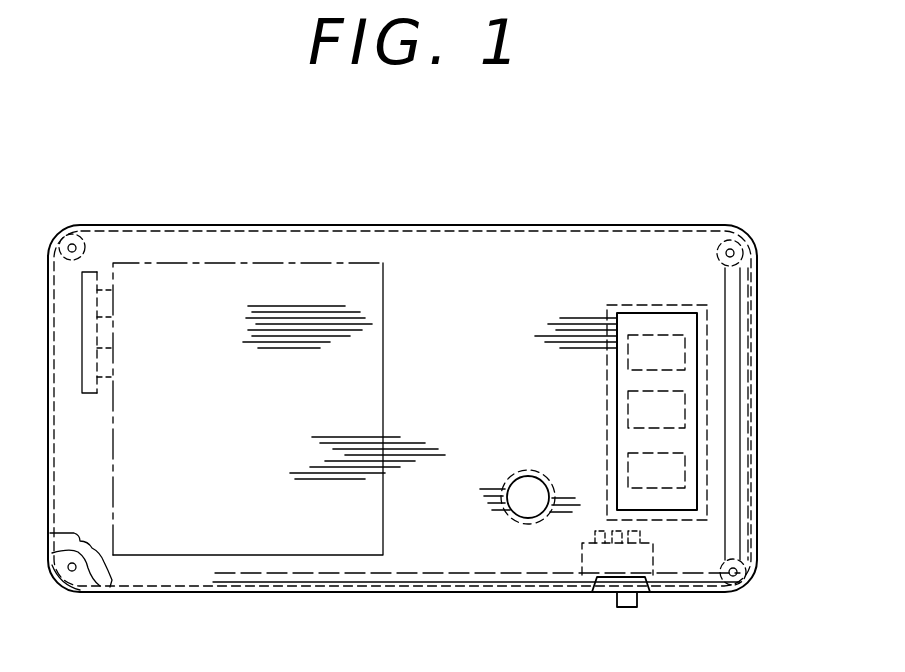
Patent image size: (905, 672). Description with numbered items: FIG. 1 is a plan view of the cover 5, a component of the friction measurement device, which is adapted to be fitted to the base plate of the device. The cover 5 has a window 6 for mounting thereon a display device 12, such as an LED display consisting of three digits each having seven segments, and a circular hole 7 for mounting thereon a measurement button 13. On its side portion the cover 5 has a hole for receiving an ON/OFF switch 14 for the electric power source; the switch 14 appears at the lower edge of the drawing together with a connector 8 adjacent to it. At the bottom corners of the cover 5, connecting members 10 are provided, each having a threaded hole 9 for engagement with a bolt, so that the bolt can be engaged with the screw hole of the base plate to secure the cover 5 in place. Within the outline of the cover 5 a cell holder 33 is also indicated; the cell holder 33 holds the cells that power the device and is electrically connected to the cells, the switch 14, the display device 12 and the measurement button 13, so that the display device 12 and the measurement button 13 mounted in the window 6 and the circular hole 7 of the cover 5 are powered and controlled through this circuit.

The cover 5 is at (467, 226).
The cell holder 33 is at (228, 263).
The window 6 is at (697, 357).
The display device 12 is at (680, 420).
The circular hole 7 is at (523, 510).
The measurement button 13 is at (513, 505).
The connector 8 is at (603, 594).
The ON/OFF switch 14 is at (627, 607).
The threaded hole 9 is at (73, 572).
The connecting member 10 is at (88, 578).